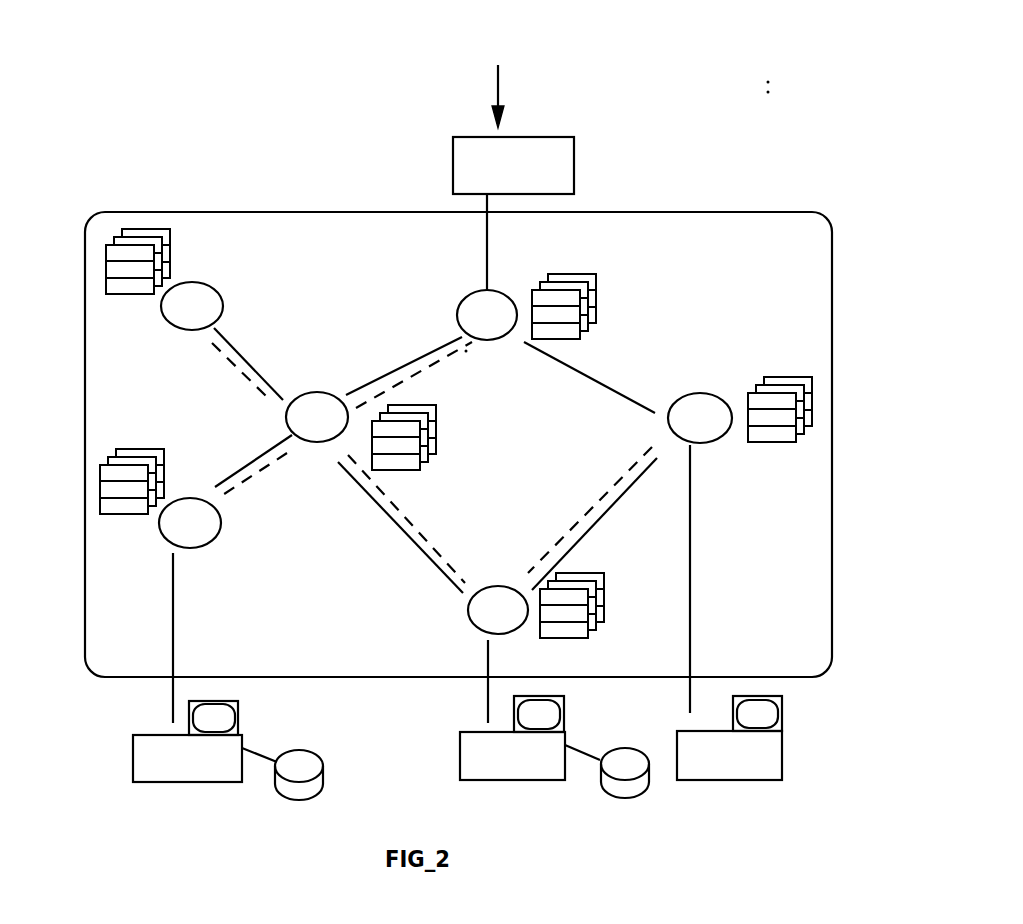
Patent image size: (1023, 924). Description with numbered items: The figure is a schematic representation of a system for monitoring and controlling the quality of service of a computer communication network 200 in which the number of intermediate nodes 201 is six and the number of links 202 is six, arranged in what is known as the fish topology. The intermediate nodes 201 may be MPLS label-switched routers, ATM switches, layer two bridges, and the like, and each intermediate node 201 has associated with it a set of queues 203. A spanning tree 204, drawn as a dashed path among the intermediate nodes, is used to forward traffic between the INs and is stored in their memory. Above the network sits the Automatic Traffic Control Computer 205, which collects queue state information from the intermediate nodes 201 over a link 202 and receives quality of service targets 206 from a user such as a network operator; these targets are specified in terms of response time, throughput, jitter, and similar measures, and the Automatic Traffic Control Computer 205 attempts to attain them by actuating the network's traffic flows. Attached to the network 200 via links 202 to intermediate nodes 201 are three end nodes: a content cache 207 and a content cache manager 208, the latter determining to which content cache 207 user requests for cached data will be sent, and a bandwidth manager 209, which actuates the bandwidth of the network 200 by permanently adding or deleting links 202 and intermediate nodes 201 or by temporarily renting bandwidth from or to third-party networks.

The network 200 is at (262, 205).
The intermediate node 201 is at (445, 471).
The link 202 is at (412, 458).
The queues 203 is at (456, 446).
The spanning tree 204 is at (428, 462).
The Automatic Traffic Control Computer 205 is at (535, 165).
The quality of service targets 206 is at (677, 65).
The content cache 207 is at (228, 756).
The content cache manager 208 is at (554, 751).
The bandwidth manager 209 is at (729, 751).